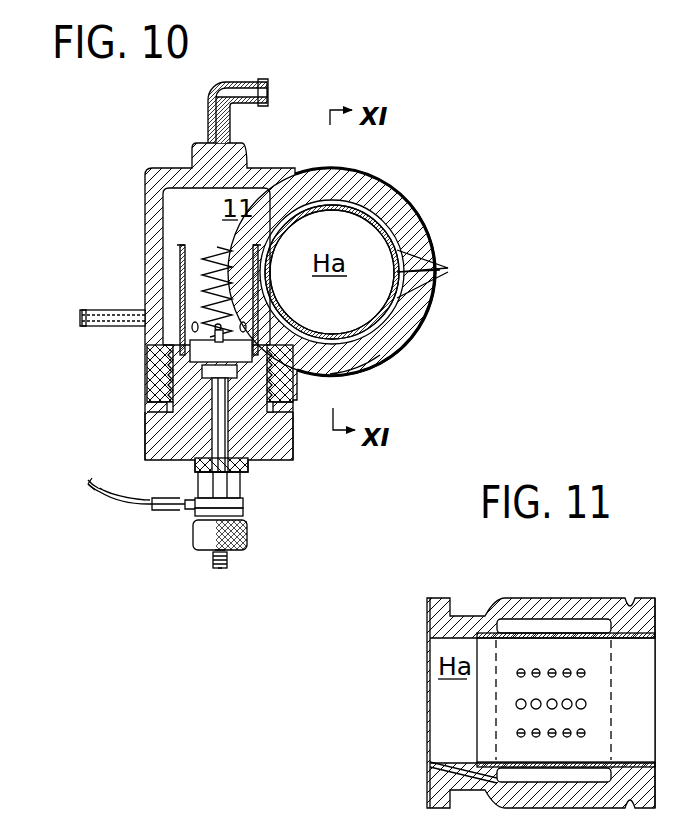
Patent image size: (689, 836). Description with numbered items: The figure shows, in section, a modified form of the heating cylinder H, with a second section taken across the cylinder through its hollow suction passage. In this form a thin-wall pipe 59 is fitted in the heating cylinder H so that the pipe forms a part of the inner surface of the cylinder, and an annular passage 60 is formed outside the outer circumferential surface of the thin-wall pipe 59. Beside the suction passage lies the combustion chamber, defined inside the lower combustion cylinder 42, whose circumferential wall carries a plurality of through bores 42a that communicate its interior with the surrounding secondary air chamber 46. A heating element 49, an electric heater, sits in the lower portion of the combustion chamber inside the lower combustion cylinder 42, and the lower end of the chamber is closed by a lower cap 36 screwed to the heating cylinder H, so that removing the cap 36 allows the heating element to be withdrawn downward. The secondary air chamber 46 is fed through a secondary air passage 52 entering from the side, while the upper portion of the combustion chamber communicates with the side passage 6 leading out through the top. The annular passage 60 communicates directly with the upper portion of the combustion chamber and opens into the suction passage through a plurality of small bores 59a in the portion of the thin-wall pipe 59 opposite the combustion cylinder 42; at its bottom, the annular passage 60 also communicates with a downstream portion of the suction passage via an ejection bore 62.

In FIG. 10, the side passage 6 is at (333, 90).
In FIG. 10, the lower cap 36 is at (152, 436).
In FIG. 10, the lower combustion cylinder 42 is at (182, 262).
In FIG. 10, the through bores 42a is at (215, 330).
In FIG. 10, the secondary air chamber 46 is at (162, 298).
In FIG. 10, the heating element 49 is at (212, 256).
In FIG. 10, the secondary air passage 52 is at (78, 318).
In FIG. 10, the thin-wall pipe 59 is at (323, 208).
In FIG. 11, the thin-wall pipe 59 is at (525, 634).
In FIG. 10, the small bores 59a is at (448, 274).
In FIG. 11, the small bores 59a is at (586, 731).
In FIG. 10, the annular passage 60 is at (370, 345).
In FIG. 11, the annular passage 60 is at (565, 626).
In FIG. 11, the ejection bore 62 is at (440, 764).
In FIG. 10, the heating cylinder H is at (400, 205).
In FIG. 11, the heating cylinder H is at (595, 602).